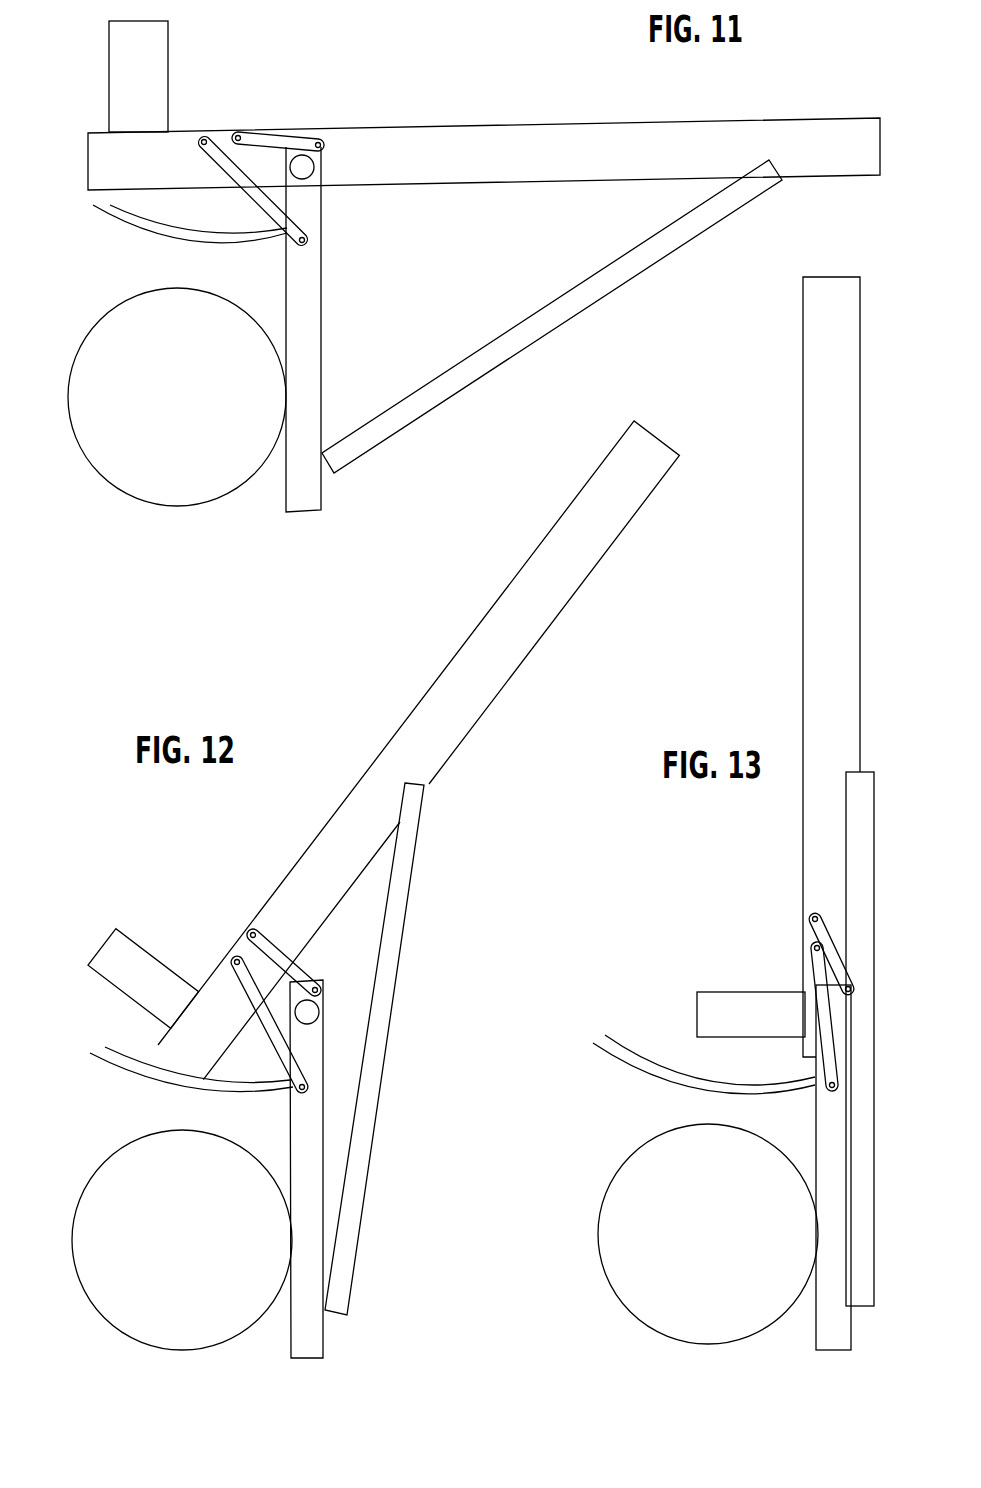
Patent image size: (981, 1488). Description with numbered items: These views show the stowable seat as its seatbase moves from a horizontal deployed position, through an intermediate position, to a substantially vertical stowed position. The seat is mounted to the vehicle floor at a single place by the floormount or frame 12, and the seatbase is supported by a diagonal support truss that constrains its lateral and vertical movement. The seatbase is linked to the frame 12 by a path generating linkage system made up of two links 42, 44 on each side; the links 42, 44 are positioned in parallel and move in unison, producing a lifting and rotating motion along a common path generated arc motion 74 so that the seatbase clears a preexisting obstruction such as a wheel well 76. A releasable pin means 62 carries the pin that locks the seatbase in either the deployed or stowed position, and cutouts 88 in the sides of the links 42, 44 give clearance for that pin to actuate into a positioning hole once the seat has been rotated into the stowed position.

In FIG. 12, the floormount or frame 12 is at (330, 1332).
In FIG. 11, the link 42 is at (268, 152).
In FIG. 12, the link 42 is at (240, 975).
In FIG. 13, the link 42 is at (831, 953).
In FIG. 11, the link 44 is at (248, 176).
In FIG. 12, the link 44 is at (238, 987).
In FIG. 13, the link 44 is at (824, 1016).
In FIG. 11, the releasable pin means 62 is at (320, 170).
In FIG. 13, the path generated arc motion 74 is at (636, 1060).
In FIG. 11, the wheel well 76 is at (170, 290).
In FIG. 12, the wheel well 76 is at (165, 1130).
In FIG. 13, the wheel well 76 is at (630, 1158).
In FIG. 13, the cutouts 88 is at (878, 1066).